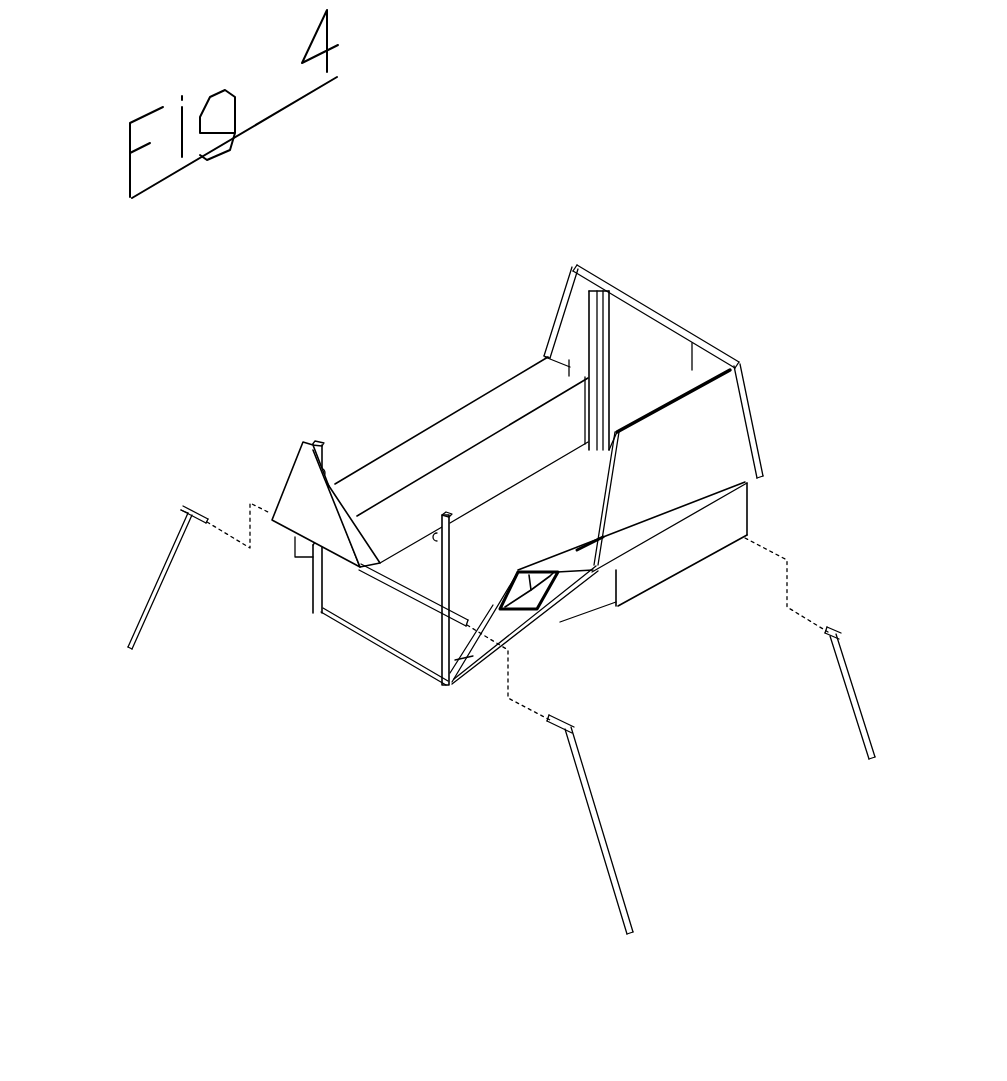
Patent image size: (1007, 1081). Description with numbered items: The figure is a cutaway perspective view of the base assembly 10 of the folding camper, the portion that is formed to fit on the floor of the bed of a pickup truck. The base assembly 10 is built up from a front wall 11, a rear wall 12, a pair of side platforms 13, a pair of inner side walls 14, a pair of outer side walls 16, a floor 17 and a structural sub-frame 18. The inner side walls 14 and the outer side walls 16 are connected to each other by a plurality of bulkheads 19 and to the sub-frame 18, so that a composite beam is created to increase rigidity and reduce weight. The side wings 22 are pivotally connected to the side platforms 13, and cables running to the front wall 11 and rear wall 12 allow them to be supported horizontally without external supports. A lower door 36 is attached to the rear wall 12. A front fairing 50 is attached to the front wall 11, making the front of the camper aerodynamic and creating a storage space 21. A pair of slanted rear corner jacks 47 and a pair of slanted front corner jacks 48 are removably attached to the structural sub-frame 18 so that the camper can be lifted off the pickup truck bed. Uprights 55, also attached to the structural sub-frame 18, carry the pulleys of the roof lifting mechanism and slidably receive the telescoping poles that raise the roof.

The base assembly 10 is at (205, 368).
The front wall 11 is at (353, 597).
The rear wall 12 is at (577, 317).
The side platforms 13 is at (638, 713).
The inner side walls 14 is at (477, 700).
The outer side walls 16 is at (735, 517).
The floor 17 is at (497, 530).
The structural sub-frame 18 is at (747, 535).
The bulkheads 19 is at (557, 641).
The storage space 21 is at (340, 522).
The side wings 22 is at (718, 418).
The lower door 36 is at (648, 312).
The slanted rear corner jacks 47 is at (855, 720).
The slanted front corner jacks 48 is at (590, 820).
The front fairing 50 is at (277, 488).
The uprights 55 is at (345, 866).